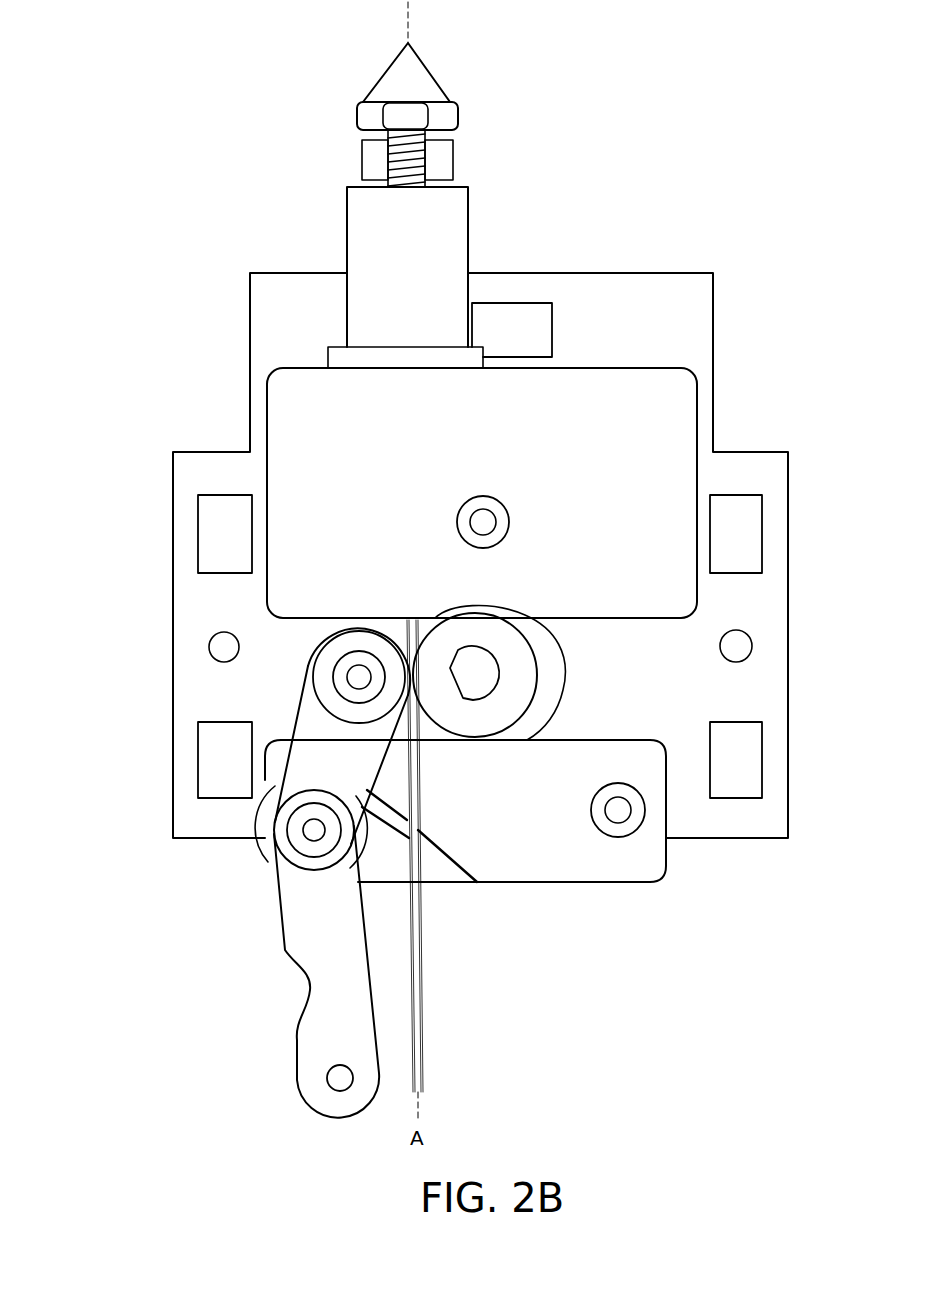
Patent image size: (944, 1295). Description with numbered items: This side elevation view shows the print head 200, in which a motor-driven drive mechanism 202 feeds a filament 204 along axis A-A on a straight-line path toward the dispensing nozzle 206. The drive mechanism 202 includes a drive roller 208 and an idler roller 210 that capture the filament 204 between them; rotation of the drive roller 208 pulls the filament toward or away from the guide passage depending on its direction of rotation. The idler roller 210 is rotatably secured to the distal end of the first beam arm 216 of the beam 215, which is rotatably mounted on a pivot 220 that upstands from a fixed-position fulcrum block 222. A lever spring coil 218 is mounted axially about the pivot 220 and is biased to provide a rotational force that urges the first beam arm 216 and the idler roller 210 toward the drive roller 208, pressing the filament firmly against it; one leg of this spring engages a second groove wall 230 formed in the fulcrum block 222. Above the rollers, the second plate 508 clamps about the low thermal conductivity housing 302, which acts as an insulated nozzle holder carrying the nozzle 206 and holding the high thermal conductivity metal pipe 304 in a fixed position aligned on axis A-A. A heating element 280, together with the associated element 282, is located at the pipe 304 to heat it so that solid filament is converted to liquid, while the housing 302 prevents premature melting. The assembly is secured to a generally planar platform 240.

The print head 200 is at (714, 96).
The drive mechanism 202 is at (278, 688).
The filament 204 is at (424, 1002).
The nozzle 206 is at (418, 62).
The drive roller 208 is at (540, 668).
The idler roller 210 is at (320, 650).
The beam 215 is at (274, 897).
The first beam arm 216 is at (302, 710).
The lever spring coil 218 is at (376, 802).
The pivot 220 is at (310, 828).
The fulcrum block 222 is at (667, 866).
The second groove wall 230 is at (262, 415).
The platform 240 is at (275, 284).
The heating element 280 is at (361, 150).
The lock nut 282 is at (455, 164).
The housing 302 is at (468, 214).
The pipe 304 is at (428, 165).
The second plate 508 is at (698, 408).